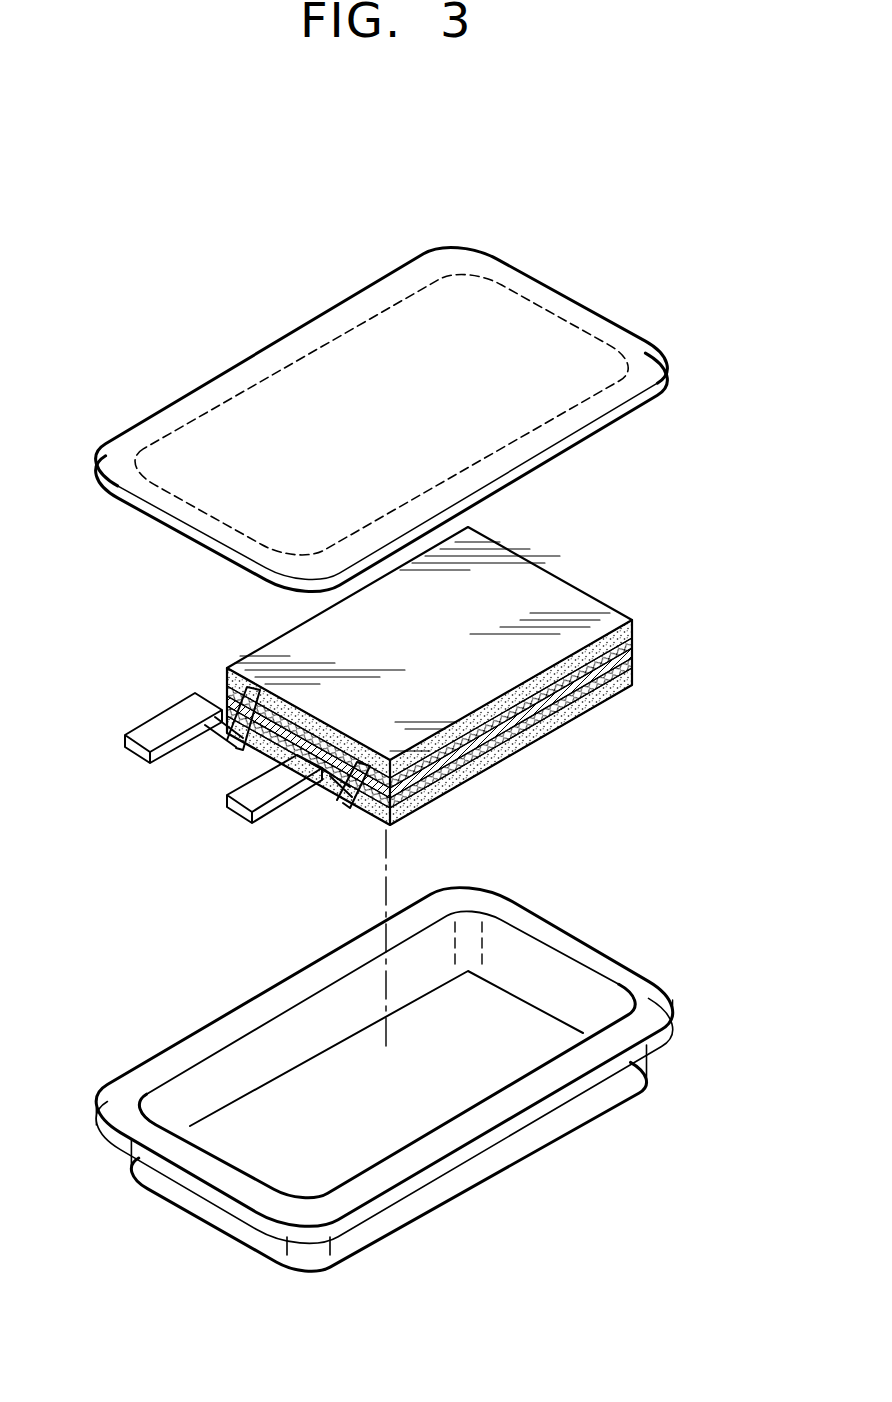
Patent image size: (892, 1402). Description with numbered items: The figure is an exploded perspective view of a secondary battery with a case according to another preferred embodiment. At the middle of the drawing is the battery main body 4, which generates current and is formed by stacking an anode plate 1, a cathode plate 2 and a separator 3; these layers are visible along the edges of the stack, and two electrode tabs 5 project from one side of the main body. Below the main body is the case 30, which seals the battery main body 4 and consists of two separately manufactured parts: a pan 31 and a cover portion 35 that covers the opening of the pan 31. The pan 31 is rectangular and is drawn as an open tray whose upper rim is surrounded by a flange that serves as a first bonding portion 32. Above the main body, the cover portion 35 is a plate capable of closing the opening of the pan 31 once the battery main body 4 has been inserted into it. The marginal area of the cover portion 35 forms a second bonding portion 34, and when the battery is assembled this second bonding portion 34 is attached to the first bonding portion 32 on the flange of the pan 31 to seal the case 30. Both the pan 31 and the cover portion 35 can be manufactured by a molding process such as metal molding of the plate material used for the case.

The anode plate 1 is at (634, 636).
The cathode plate 2 is at (468, 746).
The separator 3 is at (634, 662).
The battery main body 4 is at (494, 676).
The electrode tab 5 is at (158, 728).
The case 30 is at (373, 1111).
The pan 31 is at (170, 1190).
The first bonding portion 32 is at (263, 1197).
The second bonding portion 34 is at (612, 402).
The cover portion 35 is at (510, 335).